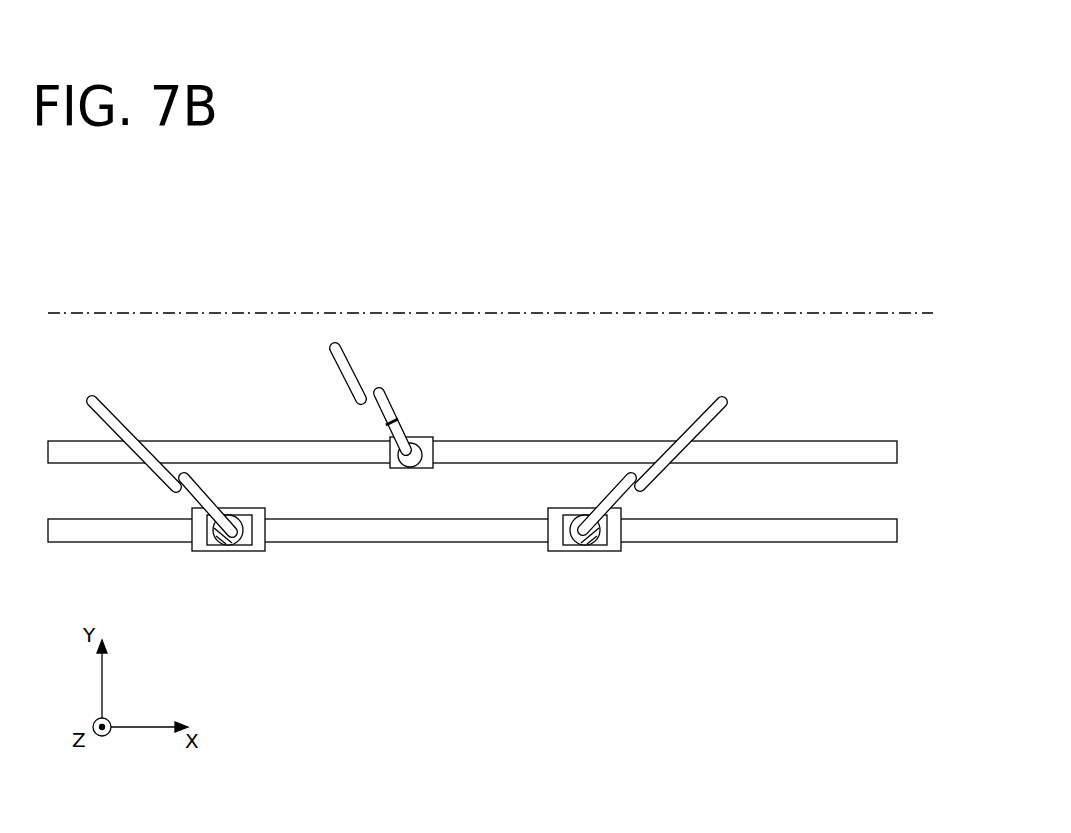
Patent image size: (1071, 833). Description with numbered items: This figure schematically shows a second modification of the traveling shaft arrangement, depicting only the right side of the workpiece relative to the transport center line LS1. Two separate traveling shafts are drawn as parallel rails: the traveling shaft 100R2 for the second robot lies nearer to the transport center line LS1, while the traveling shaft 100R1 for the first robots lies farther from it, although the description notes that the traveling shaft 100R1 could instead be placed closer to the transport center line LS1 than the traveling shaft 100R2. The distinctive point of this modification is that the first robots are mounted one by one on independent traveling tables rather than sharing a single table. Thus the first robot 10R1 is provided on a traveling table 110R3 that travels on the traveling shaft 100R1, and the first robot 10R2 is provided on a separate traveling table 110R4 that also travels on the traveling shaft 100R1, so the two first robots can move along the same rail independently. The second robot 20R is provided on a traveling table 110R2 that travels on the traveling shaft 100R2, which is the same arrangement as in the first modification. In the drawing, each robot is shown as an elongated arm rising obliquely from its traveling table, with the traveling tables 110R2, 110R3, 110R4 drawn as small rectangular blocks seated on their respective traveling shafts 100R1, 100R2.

The transport center line LS1 is at (843, 310).
The traveling shaft 100R1 is at (817, 527).
The traveling shaft 100R2 is at (777, 453).
The traveling table 110R2 is at (435, 437).
The traveling table 110R3 is at (259, 551).
The traveling table 110R4 is at (557, 546).
The first robot 10R1 is at (144, 418).
The first robot 10R2 is at (670, 413).
The second robot 20R is at (410, 406).